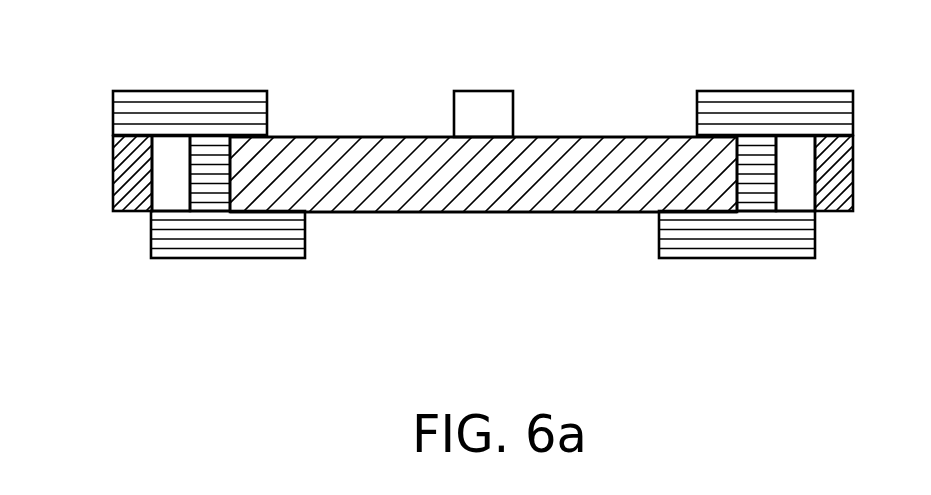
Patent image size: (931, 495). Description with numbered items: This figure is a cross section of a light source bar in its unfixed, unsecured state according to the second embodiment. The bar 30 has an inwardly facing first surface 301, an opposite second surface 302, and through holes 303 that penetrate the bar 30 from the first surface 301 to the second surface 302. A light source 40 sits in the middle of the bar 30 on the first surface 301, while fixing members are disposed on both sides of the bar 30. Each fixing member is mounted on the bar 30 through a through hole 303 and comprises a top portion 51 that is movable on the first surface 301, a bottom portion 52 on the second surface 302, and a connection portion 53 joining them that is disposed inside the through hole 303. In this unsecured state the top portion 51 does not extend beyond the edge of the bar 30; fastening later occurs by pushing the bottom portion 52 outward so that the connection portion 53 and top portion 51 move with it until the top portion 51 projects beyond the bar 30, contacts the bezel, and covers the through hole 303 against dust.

The bar 30 is at (509, 182).
The first surface 301 is at (301, 137).
The second surface 302 is at (403, 212).
The through hole 303 is at (163, 192).
The light source 40 is at (487, 113).
The top portion 51 is at (157, 110).
The bottom portion 52 is at (263, 232).
The connection portion 53 is at (200, 157).